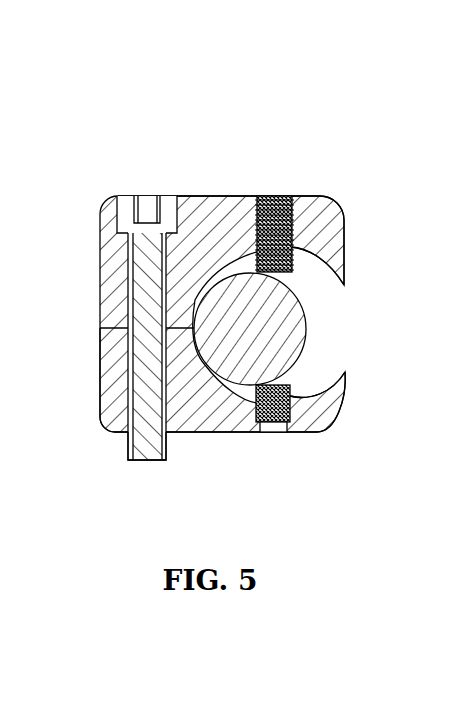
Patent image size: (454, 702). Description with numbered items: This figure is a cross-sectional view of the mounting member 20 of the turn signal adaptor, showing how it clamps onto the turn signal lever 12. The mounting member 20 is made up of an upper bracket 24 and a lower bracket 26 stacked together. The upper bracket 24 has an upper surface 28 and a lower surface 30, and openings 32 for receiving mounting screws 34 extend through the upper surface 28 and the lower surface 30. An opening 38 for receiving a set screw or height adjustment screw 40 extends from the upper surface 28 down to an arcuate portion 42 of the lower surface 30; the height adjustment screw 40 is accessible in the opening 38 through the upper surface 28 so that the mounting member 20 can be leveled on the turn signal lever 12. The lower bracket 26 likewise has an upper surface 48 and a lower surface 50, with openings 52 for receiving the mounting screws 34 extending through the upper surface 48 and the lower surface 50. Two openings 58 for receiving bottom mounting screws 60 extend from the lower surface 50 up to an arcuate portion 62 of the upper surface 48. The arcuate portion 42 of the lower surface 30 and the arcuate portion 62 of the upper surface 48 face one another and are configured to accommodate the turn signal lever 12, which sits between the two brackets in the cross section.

The mounting member 20 is at (133, 118).
The turn signal lever 12 is at (322, 329).
The upper bracket 24 is at (344, 218).
The lower bracket 26 is at (216, 434).
The upper surface 28 is at (210, 196).
The lower surface 30 is at (108, 344).
The openings 32 is at (128, 247).
The mounting screws 34 is at (128, 388).
The opening 38 is at (284, 196).
The height adjustment screw 40 is at (275, 196).
The arcuate portion 42 is at (320, 263).
The upper surface 48 is at (108, 326).
The lower surface 50 is at (248, 434).
The openings 52 is at (128, 433).
The openings 58 is at (286, 434).
The bottom mounting screws 60 is at (333, 420).
The arcuate portion 62 is at (332, 383).